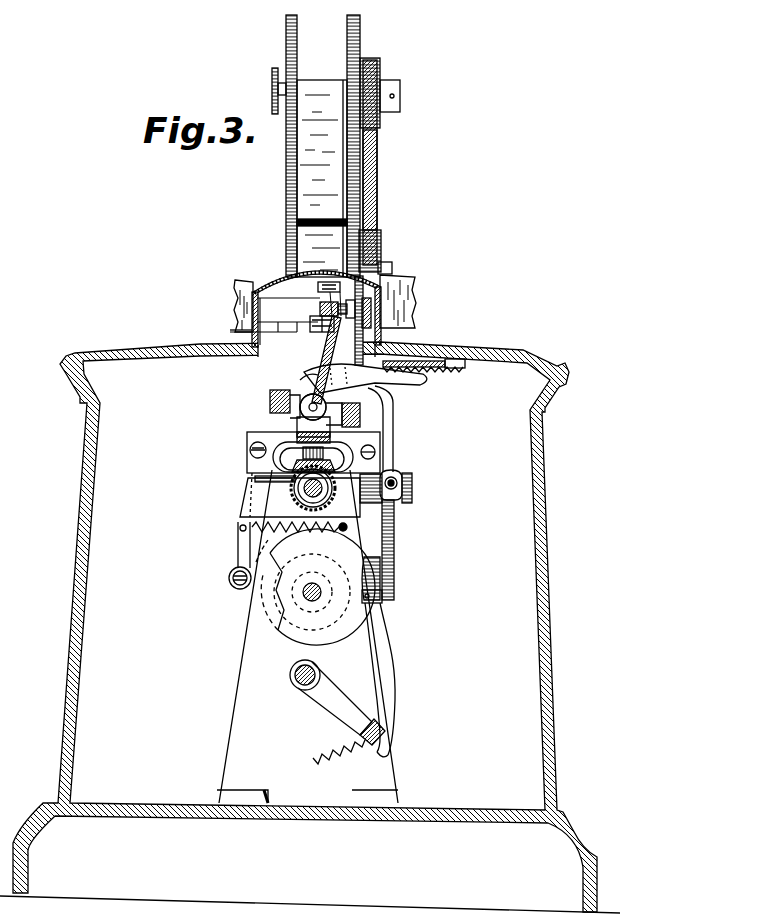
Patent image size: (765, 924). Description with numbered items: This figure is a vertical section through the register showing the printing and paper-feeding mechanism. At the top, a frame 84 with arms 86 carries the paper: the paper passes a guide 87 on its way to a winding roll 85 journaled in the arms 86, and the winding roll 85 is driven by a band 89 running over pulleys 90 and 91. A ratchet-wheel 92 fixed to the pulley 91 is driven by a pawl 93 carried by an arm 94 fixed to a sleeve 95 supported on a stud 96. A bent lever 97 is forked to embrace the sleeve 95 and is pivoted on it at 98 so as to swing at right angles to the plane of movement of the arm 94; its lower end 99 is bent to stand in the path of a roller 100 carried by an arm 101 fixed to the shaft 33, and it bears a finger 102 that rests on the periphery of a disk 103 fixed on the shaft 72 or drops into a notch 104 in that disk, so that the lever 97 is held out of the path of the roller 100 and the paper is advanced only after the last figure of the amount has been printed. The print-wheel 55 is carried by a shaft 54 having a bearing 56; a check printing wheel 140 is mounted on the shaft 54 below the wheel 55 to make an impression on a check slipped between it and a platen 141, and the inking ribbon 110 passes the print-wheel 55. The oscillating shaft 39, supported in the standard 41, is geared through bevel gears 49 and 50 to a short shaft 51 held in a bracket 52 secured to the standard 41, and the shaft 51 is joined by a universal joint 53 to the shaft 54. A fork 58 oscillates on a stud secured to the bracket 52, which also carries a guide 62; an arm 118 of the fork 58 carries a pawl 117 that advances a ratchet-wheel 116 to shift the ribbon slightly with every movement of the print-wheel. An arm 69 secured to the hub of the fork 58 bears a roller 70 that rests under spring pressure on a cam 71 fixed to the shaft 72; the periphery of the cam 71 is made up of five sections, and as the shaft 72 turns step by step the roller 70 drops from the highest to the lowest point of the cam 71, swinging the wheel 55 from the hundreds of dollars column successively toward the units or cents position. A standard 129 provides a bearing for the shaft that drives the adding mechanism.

The arms of the frame 86 is at (291, 26).
The frame 84 is at (292, 171).
The guide 87 is at (322, 215).
The winding roll 85 is at (272, 92).
The band 89 is at (378, 150).
The pulley 90 is at (381, 72).
The ratchet-wheel 92 is at (377, 226).
The pulley 91 is at (381, 254).
The inking ribbon 110 is at (253, 268).
The print-wheel 55 is at (415, 272).
The bearing 56 is at (320, 310).
The check printing wheel 140 is at (371, 310).
The platen 141 is at (252, 329).
The pawl 93 is at (383, 347).
The shaft 54 is at (322, 352).
The arm of the fork 118 is at (311, 386).
The pawl 117 is at (415, 381).
The ratchet-wheel 116 is at (464, 369).
The universal joint 53 is at (300, 407).
The fork 58 is at (361, 411).
The short shaft 51 is at (300, 431).
The bracket 52 is at (352, 455).
The guide 62 is at (250, 450).
The bevel gear 50 is at (300, 462).
The bevel gear 49 is at (262, 503).
The shaft 39 is at (308, 492).
The standard 41 is at (343, 508).
The arm 94 is at (396, 455).
The sleeve 95 is at (402, 482).
The stud 96 is at (412, 492).
The pivot 98 is at (400, 503).
The bent lever 97 is at (395, 540).
The finger 102 is at (381, 578).
The notch 104 is at (382, 605).
The lower end of the lever 99 is at (386, 672).
The disk 103 is at (322, 587).
The shaft 72 is at (312, 602).
The cam 71 is at (272, 600).
The arm 69 is at (238, 550).
The roller 70 is at (229, 579).
The shaft 33 is at (300, 688).
The arm 101 is at (341, 703).
The roller 100 is at (365, 736).
The standard 129 is at (240, 720).